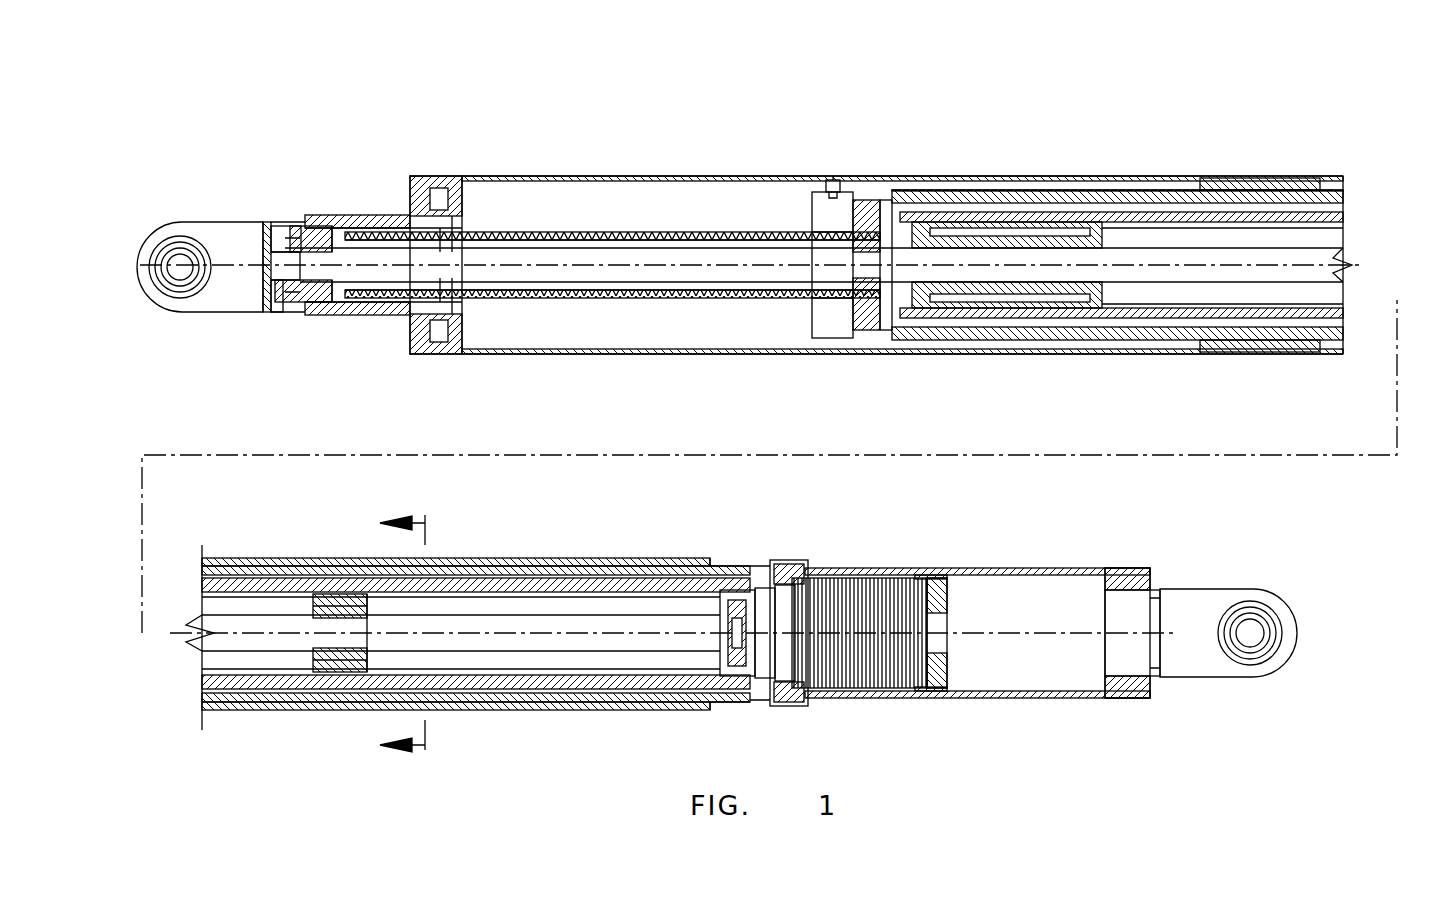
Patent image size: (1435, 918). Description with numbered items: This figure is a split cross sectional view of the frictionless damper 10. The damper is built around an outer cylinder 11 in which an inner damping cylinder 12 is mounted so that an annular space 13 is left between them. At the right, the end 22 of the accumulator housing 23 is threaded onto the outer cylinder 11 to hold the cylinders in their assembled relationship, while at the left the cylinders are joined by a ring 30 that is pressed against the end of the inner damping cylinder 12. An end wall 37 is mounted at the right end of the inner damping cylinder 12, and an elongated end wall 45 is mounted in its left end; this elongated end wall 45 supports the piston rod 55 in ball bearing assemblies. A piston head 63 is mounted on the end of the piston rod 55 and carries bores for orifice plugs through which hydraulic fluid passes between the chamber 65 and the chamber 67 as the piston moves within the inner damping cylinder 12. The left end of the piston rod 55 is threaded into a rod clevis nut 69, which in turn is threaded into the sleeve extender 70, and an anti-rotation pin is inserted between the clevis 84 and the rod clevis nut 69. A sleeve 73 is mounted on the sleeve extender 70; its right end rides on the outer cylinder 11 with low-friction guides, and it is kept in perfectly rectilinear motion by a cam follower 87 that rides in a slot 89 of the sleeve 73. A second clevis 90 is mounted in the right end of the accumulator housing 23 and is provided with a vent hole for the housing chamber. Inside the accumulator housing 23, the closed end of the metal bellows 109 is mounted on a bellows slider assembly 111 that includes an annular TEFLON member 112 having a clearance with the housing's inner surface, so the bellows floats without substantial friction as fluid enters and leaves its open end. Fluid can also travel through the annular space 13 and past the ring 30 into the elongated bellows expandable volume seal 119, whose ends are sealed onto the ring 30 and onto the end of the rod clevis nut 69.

The frictionless damper 10 is at (1248, 103).
The outer cylinder 11 is at (1338, 180).
The inner damping cylinder 12 is at (1343, 218).
The annular space 13 is at (1343, 199).
The end of accumulator housing 22 is at (760, 570).
The accumulator housing 23 is at (990, 568).
The ring 30 is at (822, 228).
The end wall 37 is at (716, 672).
The elongated end wall 45 is at (1122, 245).
The piston rod 55 is at (1345, 266).
The piston head 63 is at (368, 618).
The chamber 65 is at (590, 615).
The chamber 67 is at (1305, 297).
The rod clevis nut 69 is at (318, 270).
The sleeve extender 70 is at (386, 215).
The sleeve 73 is at (942, 190).
The clevis 84 is at (243, 222).
The cam follower 87 is at (846, 184).
The slot 89 is at (652, 178).
The clevis 90 is at (1186, 588).
The metal bellows 109 is at (848, 608).
The bellows slider assembly 111 is at (950, 611).
The annular TEFLON member 112 is at (940, 696).
The bellows expandable volume seal 119 is at (706, 238).